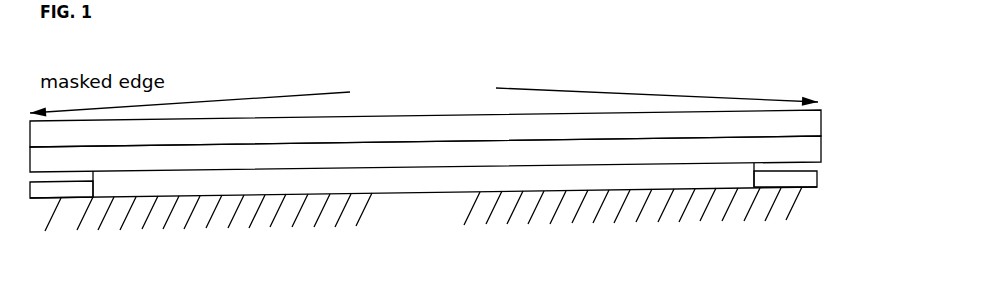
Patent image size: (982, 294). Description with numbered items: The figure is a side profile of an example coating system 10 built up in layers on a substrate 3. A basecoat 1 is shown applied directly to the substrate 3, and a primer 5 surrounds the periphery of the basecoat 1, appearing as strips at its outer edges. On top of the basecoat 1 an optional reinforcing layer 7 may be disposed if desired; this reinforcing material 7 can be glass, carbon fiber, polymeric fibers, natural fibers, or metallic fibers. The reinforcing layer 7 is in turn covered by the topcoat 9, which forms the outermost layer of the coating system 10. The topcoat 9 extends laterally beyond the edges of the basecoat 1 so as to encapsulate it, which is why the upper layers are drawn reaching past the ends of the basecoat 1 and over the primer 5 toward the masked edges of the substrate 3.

The basecoat 1 is at (812, 206).
The substrate 3 is at (482, 200).
The primer 5 is at (822, 181).
The optional reinforcing layer 7 is at (823, 152).
The topcoat 9 is at (825, 118).
The coating system 10 is at (596, 73).